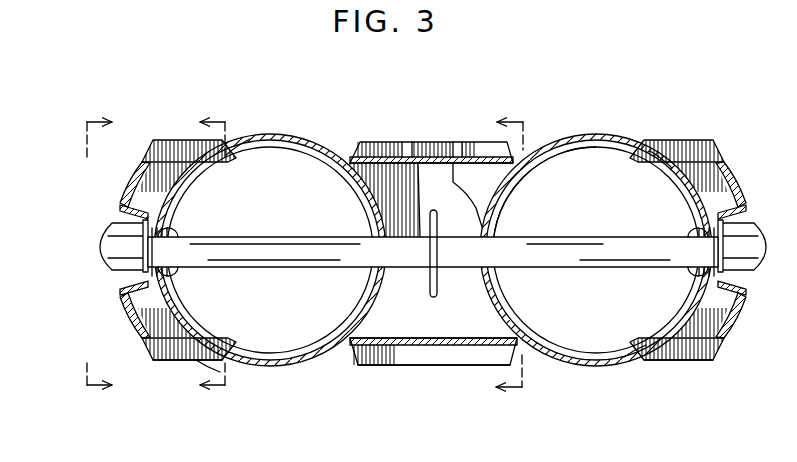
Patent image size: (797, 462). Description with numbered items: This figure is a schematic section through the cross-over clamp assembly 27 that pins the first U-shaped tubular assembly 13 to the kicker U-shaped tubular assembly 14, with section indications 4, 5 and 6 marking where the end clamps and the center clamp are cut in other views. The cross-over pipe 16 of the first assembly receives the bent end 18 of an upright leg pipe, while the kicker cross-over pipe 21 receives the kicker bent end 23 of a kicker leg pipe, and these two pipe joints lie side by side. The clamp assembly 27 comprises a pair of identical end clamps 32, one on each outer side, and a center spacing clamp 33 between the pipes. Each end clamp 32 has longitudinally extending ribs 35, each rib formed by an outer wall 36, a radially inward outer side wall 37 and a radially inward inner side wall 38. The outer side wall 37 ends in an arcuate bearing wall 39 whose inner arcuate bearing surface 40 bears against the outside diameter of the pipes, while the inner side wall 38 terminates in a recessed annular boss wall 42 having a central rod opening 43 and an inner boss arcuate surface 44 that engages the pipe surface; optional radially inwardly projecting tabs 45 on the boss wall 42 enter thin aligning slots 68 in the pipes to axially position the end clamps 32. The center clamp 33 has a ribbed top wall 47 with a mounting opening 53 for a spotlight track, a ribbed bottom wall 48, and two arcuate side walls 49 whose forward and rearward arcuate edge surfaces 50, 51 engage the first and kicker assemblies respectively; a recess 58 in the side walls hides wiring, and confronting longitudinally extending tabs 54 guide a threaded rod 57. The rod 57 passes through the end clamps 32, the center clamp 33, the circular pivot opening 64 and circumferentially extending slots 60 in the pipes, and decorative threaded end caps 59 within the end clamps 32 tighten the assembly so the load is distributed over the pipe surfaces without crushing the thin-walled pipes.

The first U-shaped tubular assembly 13 is at (585, 118).
The kicker U-shaped tubular assembly 14 is at (316, 128).
The cross-over pipe 16 is at (595, 368).
The bent end 18 is at (575, 368).
The kicker cross-over pipe 21 is at (302, 362).
The kicker bent end 23 is at (265, 370).
The cross-over clamp assembly 27 is at (383, 395).
The end clamp 32 is at (168, 366).
The center spacing clamp 33 is at (428, 367).
The longitudinally extending rib 35 is at (123, 186).
The outer wall 36 is at (133, 170).
The outer side wall 37 is at (165, 140).
The inner side wall 38 is at (118, 216).
The arcuate shaped bearing wall 39 is at (200, 150).
The inner arcuate bearing surface 40 is at (237, 152).
The recessed annular boss wall 42 is at (120, 270).
The central rod opening 43 is at (173, 238).
The inner boss arcuate surface 44 is at (173, 220).
The radially inwardly projecting tab 45 is at (690, 240).
The ribbed top wall 47 is at (372, 153).
The ribbed bottom wall 48 is at (467, 349).
The arcuate side wall 49 is at (407, 330).
The forward arcuate edge surface 50 is at (490, 290).
The rearward arcuate edge surface 51 is at (373, 283).
The mounting opening 53 is at (426, 140).
The longitudinally extending tab 54 is at (437, 283).
The threaded rod 57 is at (582, 258).
The recess 58 is at (474, 160).
The decorative threaded end cap 59 is at (108, 242).
The circumferentially extending slot 60 is at (183, 303).
The circular pivot opening 64 is at (490, 237).
The aligning slot 68 is at (697, 277).
The section line 4 is at (84, 252).
The section line 5 is at (224, 250).
The section line 6 is at (520, 253).